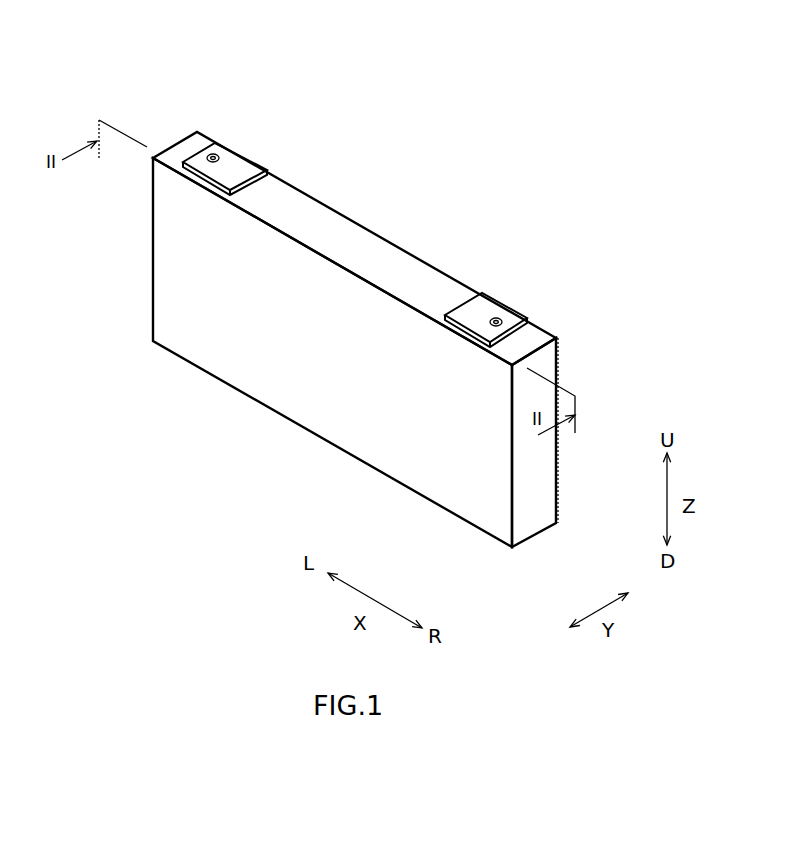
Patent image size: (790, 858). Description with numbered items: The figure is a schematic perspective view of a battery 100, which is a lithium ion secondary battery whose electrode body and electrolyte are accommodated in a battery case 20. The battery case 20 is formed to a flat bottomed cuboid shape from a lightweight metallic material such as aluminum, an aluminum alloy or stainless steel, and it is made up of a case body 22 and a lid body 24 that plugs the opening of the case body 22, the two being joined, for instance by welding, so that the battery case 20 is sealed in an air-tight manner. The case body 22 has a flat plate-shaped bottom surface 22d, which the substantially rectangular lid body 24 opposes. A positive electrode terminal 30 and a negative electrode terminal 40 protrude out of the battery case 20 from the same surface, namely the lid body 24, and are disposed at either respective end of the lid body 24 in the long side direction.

The battery 100 is at (158, 88).
The battery case 20 is at (559, 326).
The case body 22 is at (538, 488).
The bottom surface 22d is at (245, 397).
The lid body 24 is at (353, 235).
The positive electrode terminal 30 is at (227, 162).
The negative electrode terminal 40 is at (487, 312).